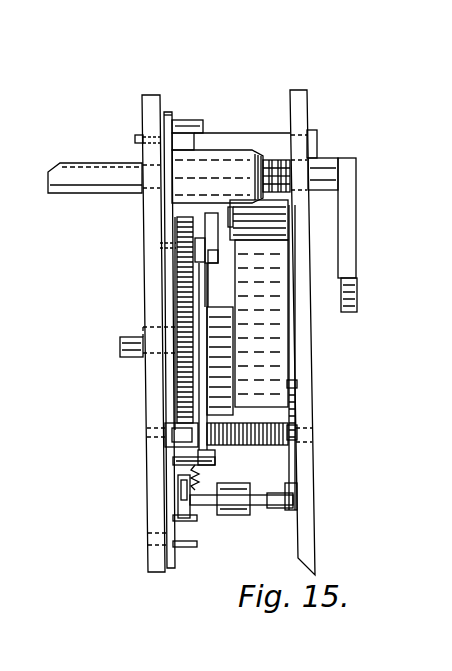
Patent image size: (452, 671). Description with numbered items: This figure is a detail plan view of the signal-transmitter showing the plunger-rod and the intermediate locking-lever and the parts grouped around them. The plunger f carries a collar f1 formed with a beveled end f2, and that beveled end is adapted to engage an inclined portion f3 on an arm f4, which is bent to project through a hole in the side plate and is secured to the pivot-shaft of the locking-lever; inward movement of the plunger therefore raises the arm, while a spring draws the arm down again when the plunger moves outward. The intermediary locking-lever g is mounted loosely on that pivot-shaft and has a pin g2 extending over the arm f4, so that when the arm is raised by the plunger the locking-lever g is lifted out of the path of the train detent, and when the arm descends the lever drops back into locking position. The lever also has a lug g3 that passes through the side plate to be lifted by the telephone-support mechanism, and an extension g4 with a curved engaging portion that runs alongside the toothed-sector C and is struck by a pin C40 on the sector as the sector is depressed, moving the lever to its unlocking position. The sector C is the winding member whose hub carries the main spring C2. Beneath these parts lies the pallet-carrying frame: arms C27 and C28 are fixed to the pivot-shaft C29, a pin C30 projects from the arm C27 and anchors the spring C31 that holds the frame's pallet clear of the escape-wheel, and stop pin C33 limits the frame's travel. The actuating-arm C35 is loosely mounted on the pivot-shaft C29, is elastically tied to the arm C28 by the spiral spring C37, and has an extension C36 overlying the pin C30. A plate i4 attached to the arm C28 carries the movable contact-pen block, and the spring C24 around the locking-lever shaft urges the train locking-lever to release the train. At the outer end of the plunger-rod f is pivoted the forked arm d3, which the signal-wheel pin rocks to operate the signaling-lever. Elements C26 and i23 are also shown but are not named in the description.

The intermediary locking-lever g is at (160, 128).
The pin g2 is at (187, 124).
The lug g3 is at (134, 141).
The extension g4 is at (170, 388).
The plunger f is at (332, 163).
The collar f1 is at (232, 160).
The beveled end f2 is at (266, 153).
The inclined portion f3 is at (269, 155).
The arm f4 is at (268, 153).
The arm d3 is at (350, 223).
The toothed-sector C is at (177, 288).
The main spring C2 is at (247, 307).
The spring C24 is at (147, 438).
The collar C26 is at (277, 507).
The arm C27 is at (172, 532).
The arm C28 is at (293, 487).
The pivot-shaft C29 is at (303, 428).
The pin C30 is at (180, 460).
The spring C31 is at (195, 507).
The stop pin C33 is at (187, 547).
The actuating-arm C35 is at (203, 345).
The extension C36 is at (210, 450).
The spiral spring C37 is at (288, 442).
The pin C40 is at (162, 245).
The plate i4 is at (293, 397).
The pin i23 is at (204, 266).